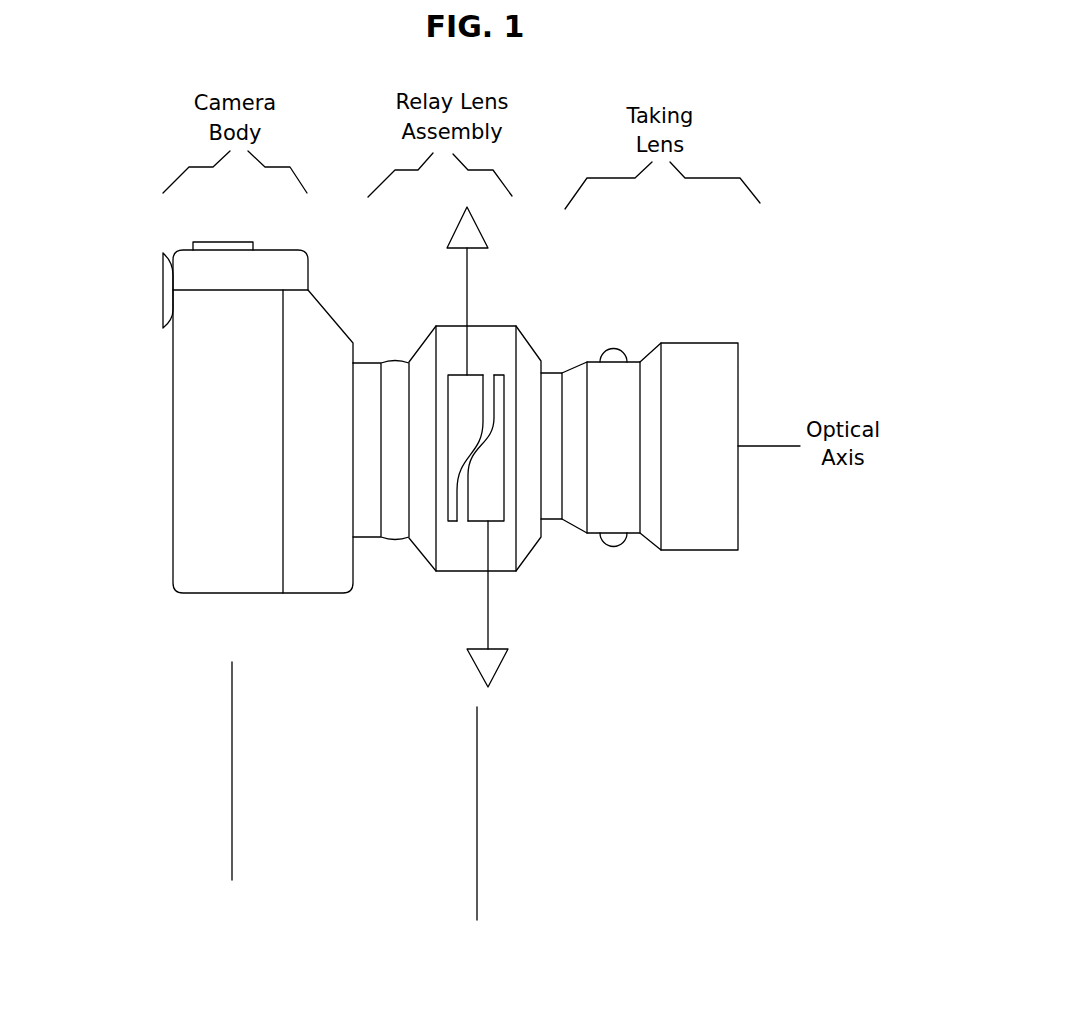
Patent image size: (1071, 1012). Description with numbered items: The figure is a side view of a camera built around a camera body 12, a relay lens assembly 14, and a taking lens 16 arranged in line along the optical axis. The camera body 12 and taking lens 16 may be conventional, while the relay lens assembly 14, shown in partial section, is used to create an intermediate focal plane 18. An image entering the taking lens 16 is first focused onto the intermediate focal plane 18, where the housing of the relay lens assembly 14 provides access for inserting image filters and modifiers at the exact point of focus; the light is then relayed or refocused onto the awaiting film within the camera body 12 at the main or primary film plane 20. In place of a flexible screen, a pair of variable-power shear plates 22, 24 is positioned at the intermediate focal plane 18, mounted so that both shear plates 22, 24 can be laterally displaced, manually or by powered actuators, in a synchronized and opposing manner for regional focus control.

The camera body 12 is at (207, 426).
The relay lens assembly 14 is at (458, 554).
The taking lens 16 is at (614, 513).
The intermediate focal plane 18 is at (477, 795).
The primary film plane 20 is at (232, 760).
The shear plate 22 is at (495, 498).
The shear plate 24 is at (462, 395).